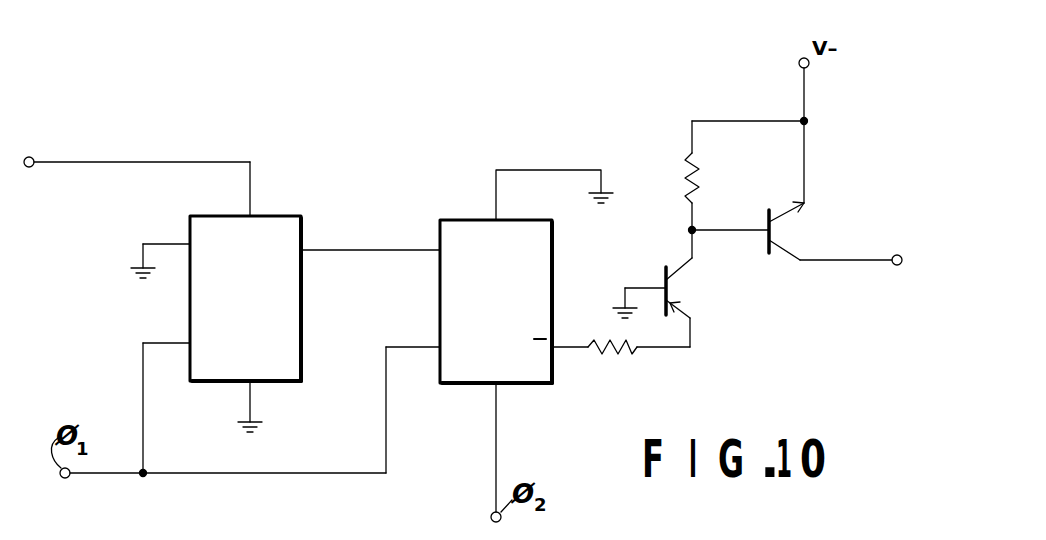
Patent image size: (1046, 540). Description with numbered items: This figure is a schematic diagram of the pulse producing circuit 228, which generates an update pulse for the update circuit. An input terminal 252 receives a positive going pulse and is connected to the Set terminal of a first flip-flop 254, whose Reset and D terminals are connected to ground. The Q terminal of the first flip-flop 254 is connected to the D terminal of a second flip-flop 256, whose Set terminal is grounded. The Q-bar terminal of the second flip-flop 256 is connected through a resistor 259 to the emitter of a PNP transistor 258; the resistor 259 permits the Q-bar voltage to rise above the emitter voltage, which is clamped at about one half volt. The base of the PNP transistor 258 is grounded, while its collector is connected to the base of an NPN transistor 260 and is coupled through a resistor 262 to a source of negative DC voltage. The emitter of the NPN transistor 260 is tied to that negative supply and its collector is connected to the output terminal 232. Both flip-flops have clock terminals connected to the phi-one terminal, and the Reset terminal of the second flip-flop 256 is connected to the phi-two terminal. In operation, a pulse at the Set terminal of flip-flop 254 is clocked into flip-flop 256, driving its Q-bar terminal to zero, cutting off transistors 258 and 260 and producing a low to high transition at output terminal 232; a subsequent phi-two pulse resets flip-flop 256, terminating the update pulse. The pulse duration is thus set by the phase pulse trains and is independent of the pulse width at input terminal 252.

The input terminal 252 is at (31, 157).
The pulse producing circuit 228 is at (499, 146).
The first flip-flop 254 is at (265, 312).
The second flip-flop 256 is at (508, 311).
The PNP transistor 258 is at (664, 276).
The resistor 259 is at (619, 351).
The NPN transistor 260 is at (766, 242).
The resistor 262 is at (697, 180).
The output terminal 232 is at (895, 254).